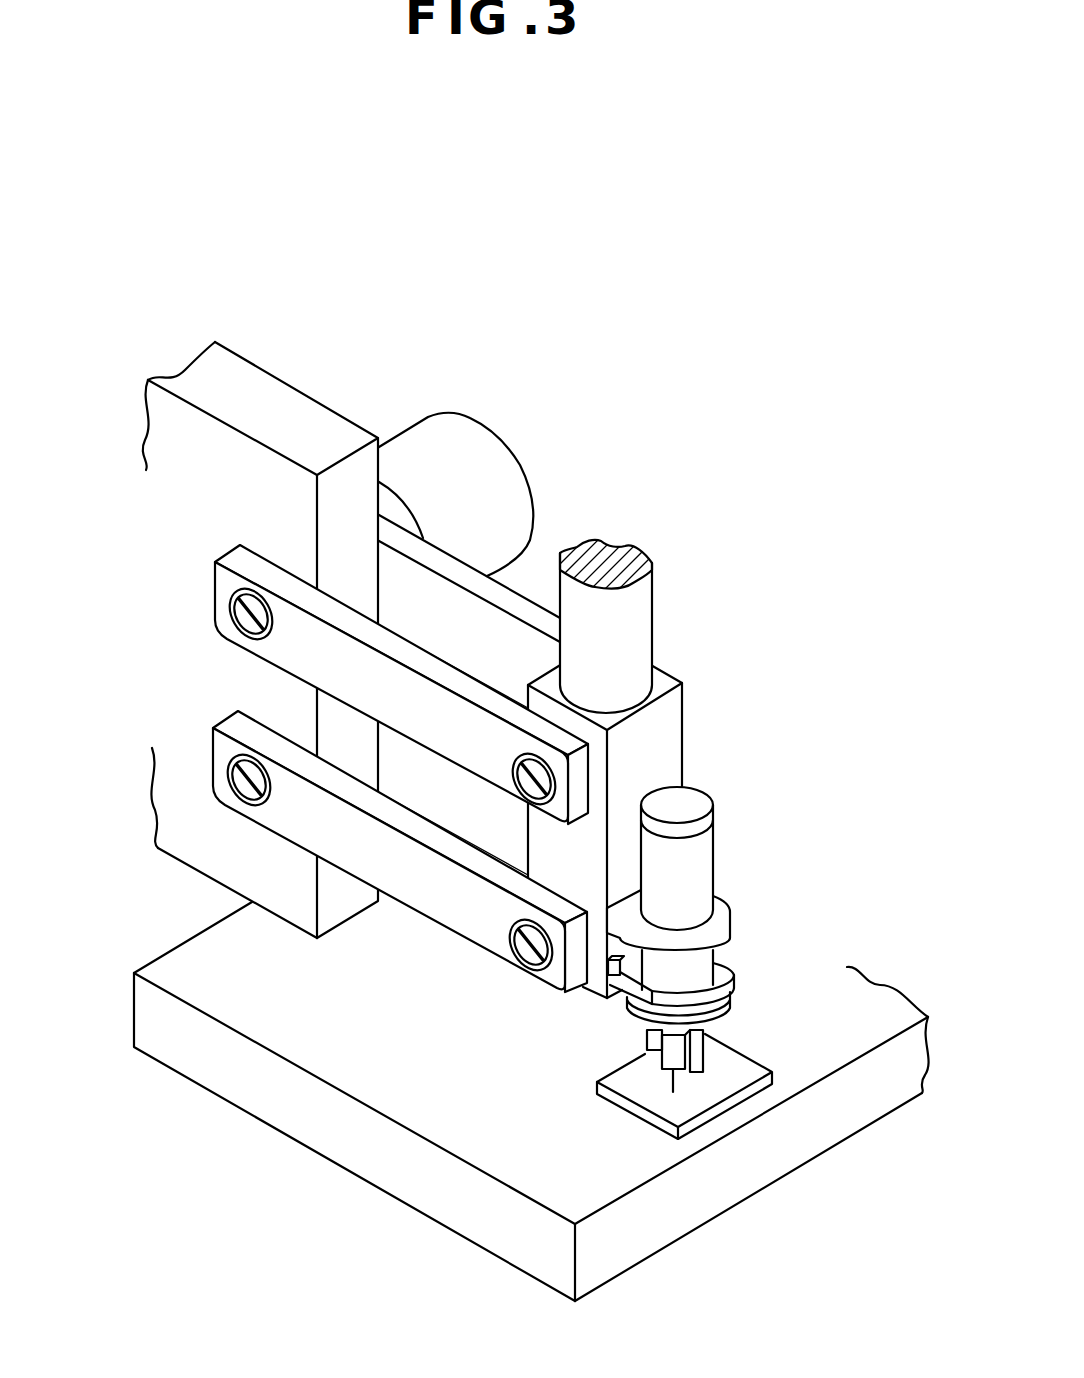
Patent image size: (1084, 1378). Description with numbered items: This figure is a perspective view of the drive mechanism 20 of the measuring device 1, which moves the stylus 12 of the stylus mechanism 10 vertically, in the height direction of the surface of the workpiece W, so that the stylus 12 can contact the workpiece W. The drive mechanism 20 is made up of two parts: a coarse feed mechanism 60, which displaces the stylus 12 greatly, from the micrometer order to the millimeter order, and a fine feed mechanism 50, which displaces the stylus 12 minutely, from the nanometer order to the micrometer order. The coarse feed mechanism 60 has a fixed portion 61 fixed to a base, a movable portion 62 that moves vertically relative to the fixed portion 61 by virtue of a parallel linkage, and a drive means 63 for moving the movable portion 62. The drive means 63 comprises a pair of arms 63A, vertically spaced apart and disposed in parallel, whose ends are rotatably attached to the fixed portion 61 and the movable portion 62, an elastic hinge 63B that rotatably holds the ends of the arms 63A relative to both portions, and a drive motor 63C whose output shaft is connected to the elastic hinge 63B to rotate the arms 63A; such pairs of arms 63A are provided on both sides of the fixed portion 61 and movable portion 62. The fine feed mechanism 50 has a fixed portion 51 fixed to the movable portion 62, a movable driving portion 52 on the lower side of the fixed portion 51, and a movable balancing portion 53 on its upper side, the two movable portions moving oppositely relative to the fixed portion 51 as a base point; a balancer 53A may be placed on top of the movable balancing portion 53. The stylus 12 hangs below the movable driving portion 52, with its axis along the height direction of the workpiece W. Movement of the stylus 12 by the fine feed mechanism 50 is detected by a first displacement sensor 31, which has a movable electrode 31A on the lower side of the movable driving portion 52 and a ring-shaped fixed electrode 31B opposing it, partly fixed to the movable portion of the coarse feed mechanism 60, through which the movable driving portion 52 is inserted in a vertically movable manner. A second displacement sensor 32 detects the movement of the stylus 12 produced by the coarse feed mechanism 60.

The measuring device 1 is at (433, 253).
The stylus mechanism 10 is at (645, 1067).
The stylus 12 is at (672, 1088).
The drive mechanism 20 is at (375, 295).
The first displacement sensor 31 is at (820, 960).
The movable electrode 31A is at (723, 1015).
The fixed electrode 31B is at (732, 980).
The second displacement sensor 32 is at (640, 623).
The fine feed mechanism 50 is at (792, 813).
The fixed portion 51 is at (720, 927).
The movable driving portion 52 is at (708, 968).
The movable balancing portion 53 is at (705, 862).
The balancer 53A is at (700, 800).
The coarse feed mechanism 60 is at (477, 360).
The fixed portion 61 is at (320, 418).
The movable portion 62 is at (673, 720).
The drive means 63 is at (505, 413).
The arms 63A is at (413, 657).
The elastic hinge 63B is at (227, 777).
The drive motor 63C is at (480, 445).
The workpiece W is at (753, 1053).